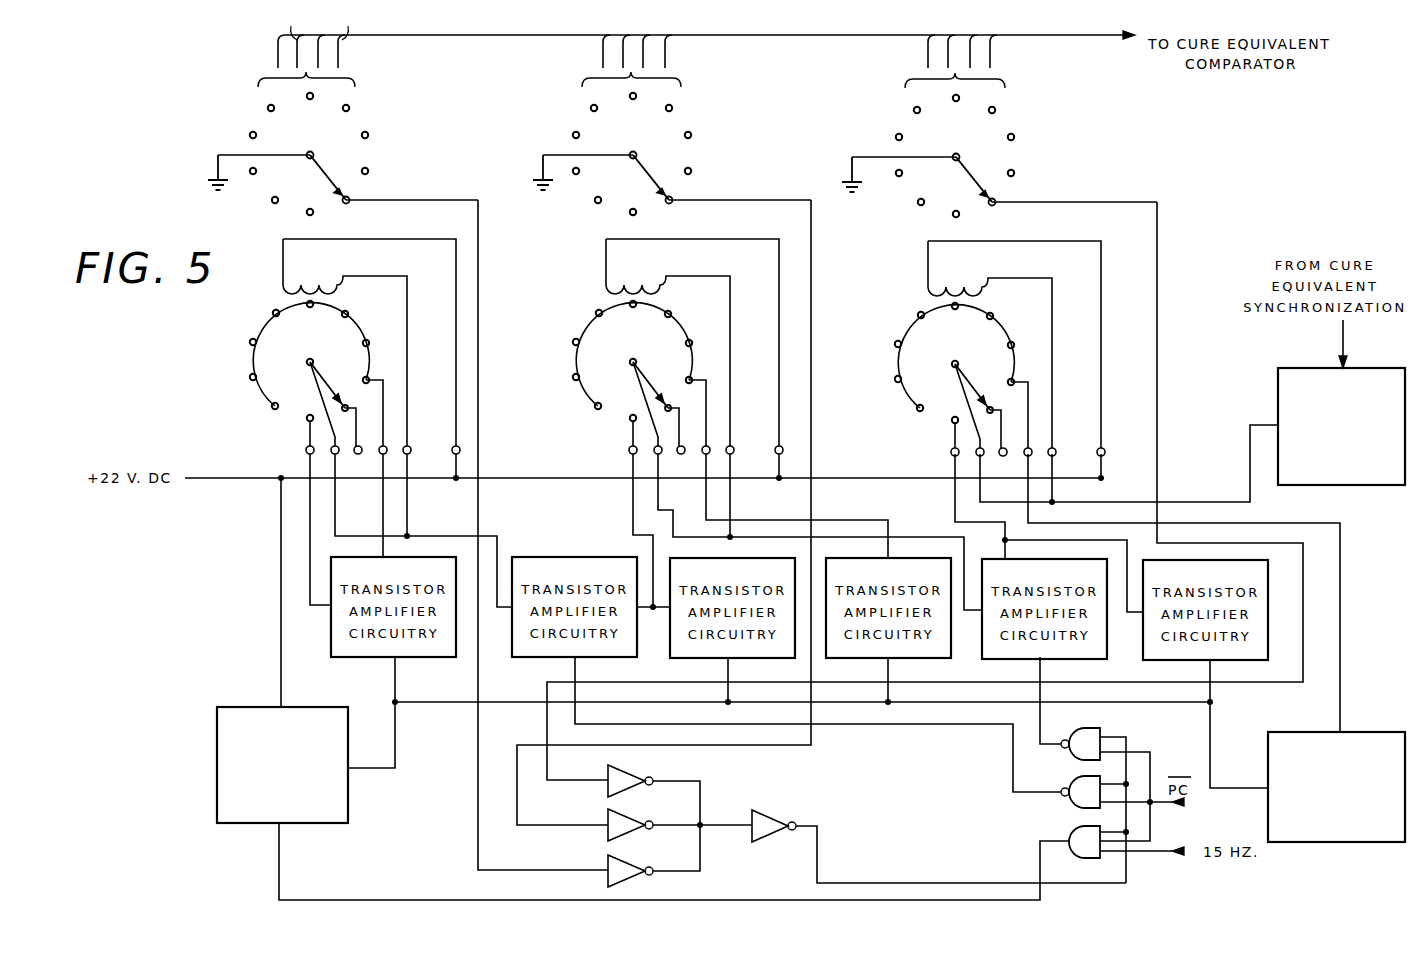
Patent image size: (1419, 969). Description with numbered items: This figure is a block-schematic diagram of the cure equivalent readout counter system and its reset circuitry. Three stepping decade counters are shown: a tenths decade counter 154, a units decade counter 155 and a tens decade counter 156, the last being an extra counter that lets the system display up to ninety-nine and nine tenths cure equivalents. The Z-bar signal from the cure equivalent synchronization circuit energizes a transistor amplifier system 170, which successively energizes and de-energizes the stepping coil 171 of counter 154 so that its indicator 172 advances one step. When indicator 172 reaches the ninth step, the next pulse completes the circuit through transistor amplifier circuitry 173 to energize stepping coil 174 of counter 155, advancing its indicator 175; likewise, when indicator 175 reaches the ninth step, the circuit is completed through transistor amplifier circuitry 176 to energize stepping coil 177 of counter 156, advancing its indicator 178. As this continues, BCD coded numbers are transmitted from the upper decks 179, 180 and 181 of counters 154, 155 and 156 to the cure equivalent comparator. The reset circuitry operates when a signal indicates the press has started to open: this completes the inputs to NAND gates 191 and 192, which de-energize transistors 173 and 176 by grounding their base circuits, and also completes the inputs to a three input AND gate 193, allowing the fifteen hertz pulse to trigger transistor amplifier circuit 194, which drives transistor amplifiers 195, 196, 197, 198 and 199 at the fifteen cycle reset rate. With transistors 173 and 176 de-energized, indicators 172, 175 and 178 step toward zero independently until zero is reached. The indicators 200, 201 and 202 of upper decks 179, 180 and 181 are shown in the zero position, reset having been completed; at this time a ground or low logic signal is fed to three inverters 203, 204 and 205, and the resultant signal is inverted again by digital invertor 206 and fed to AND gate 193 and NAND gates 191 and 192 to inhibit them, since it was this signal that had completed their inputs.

The tenths decade counter 154 is at (1048, 187).
The units decade counter 155 is at (722, 187).
The tens decade counter 156 is at (402, 185).
The transistor amplifier system 170 is at (1278, 390).
The stepping coil 171 is at (963, 291).
The indicator 172 is at (965, 374).
The transistor amplifier circuitry 173 is at (1000, 659).
The stepping coil 174 is at (641, 289).
The indicator 175 is at (643, 372).
The transistor amplifier circuitry 176 is at (545, 557).
The stepping coil 177 is at (318, 289).
The indicator 178 is at (320, 372).
The upper deck 179 is at (1000, 122).
The upper deck 180 is at (675, 119).
The upper deck 181 is at (350, 119).
The NAND gate 191 is at (1085, 728).
The NAND gate 192 is at (1068, 804).
The three input AND gate 193 is at (1088, 858).
The transistor amplifier circuit 194 is at (318, 825).
The transistor amplifier 195 is at (1305, 845).
The transistor amplifier 196 is at (1270, 628).
The transistor amplifier 197 is at (917, 558).
The transistor amplifier 198 is at (766, 558).
The transistor amplifier 199 is at (331, 649).
The indicator 200 is at (975, 170).
The indicator 201 is at (651, 167).
The indicator 202 is at (328, 167).
The inverter 203 is at (628, 772).
The inverter 204 is at (628, 816).
The inverter 205 is at (630, 880).
The digital invertor 206 is at (770, 822).